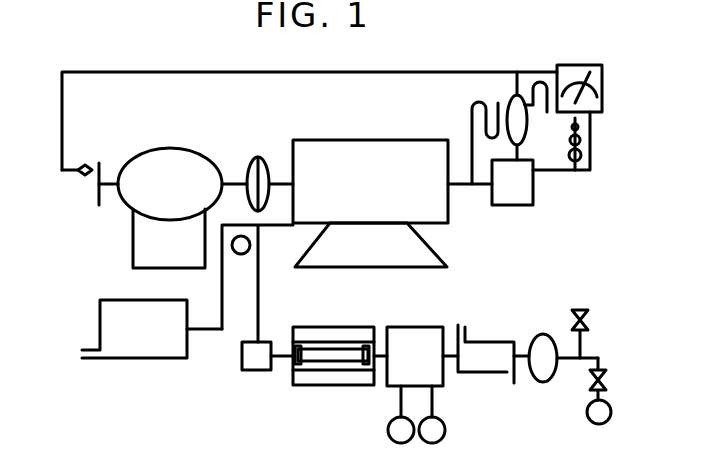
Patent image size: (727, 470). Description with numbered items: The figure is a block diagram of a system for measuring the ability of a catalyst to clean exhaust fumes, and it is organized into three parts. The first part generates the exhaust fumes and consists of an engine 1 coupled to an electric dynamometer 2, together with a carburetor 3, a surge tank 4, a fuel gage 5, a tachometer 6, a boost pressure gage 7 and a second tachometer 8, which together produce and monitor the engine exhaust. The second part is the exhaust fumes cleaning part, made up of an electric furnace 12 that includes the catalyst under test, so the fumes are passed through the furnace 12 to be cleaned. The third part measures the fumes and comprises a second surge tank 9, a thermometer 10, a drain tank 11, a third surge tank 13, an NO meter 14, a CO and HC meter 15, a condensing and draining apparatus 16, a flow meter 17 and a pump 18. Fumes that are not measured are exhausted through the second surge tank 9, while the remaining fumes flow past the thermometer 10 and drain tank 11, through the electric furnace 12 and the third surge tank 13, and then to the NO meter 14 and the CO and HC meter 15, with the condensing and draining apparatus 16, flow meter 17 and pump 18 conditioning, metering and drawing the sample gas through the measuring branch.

The engine 1 is at (344, 140).
The electric dynamometer 2 is at (179, 156).
The carburetor 3 is at (515, 205).
The surge tank 4 is at (515, 72).
The fuel gage 5 is at (568, 161).
The tachometer 6 is at (583, 65).
The boost pressure gage 7 is at (472, 113).
The tachometer 8 is at (88, 163).
The second surge tank 9 is at (118, 300).
The thermometer 10 is at (241, 254).
The drain tank 11 is at (258, 370).
The electric furnace 12 is at (328, 327).
The third surge tank 13 is at (410, 327).
The NO meter 14 is at (388, 430).
The CO and HC meter 15 is at (445, 430).
The condensing and draining apparatus 16 is at (487, 342).
The flow meter 17 is at (541, 334).
The pump 18 is at (611, 418).